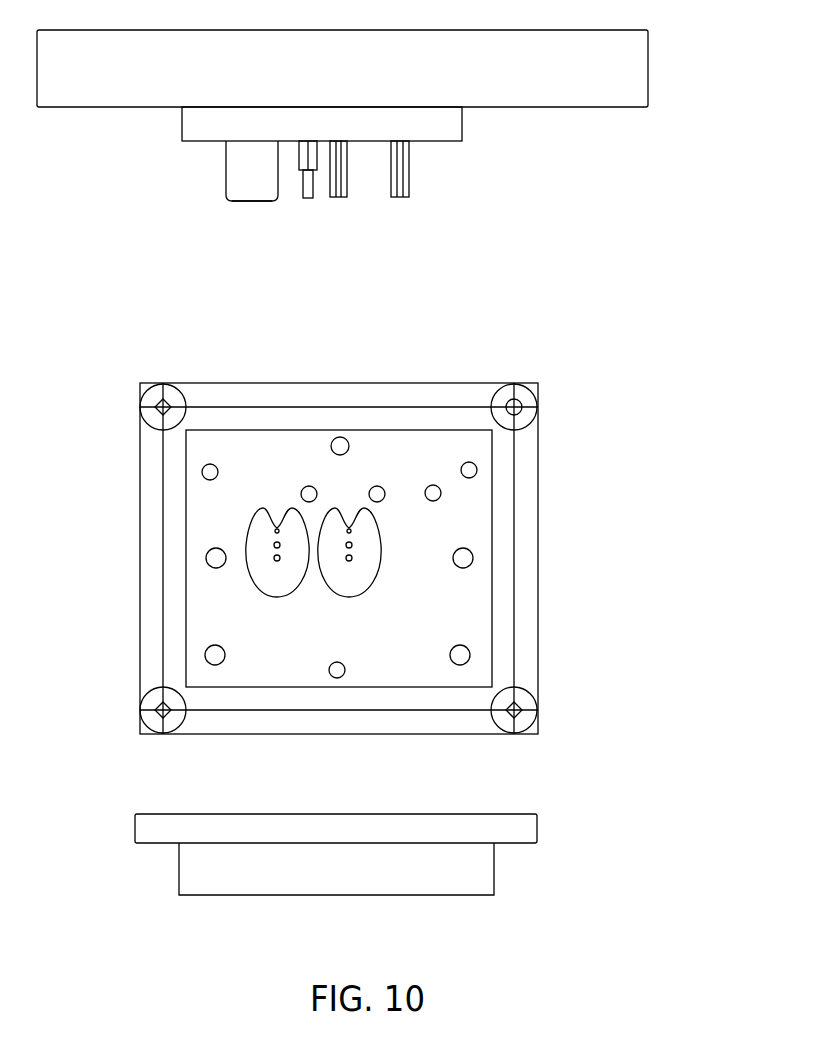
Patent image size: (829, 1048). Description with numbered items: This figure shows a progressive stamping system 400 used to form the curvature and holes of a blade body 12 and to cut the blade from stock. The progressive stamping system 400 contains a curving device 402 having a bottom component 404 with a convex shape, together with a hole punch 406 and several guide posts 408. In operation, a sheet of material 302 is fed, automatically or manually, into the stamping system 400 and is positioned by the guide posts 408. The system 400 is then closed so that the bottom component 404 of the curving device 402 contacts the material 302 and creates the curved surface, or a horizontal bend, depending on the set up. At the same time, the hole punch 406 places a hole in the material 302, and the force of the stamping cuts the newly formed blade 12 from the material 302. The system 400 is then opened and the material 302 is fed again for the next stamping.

The progressive stamping system 400 is at (657, 136).
The curving device 402 is at (243, 160).
The bottom component 404 is at (248, 204).
The hole punch 406 is at (308, 199).
The guide posts 408 is at (338, 198).
The sheet of material 302 is at (212, 527).
The blade body 12 is at (358, 548).